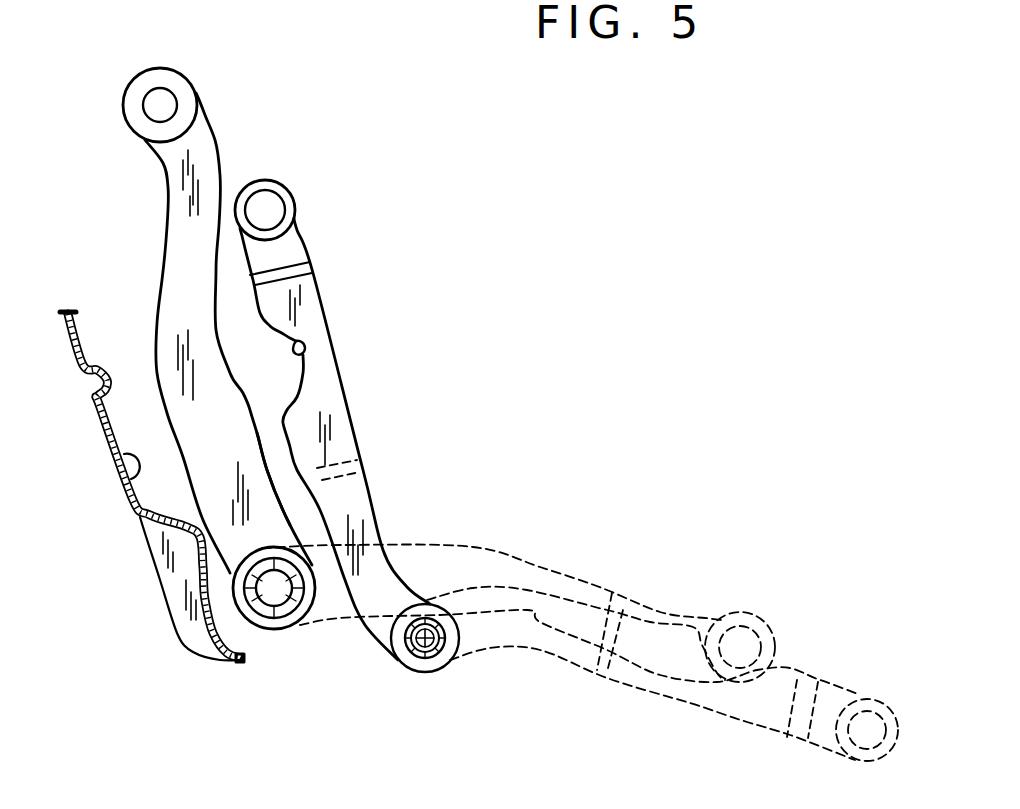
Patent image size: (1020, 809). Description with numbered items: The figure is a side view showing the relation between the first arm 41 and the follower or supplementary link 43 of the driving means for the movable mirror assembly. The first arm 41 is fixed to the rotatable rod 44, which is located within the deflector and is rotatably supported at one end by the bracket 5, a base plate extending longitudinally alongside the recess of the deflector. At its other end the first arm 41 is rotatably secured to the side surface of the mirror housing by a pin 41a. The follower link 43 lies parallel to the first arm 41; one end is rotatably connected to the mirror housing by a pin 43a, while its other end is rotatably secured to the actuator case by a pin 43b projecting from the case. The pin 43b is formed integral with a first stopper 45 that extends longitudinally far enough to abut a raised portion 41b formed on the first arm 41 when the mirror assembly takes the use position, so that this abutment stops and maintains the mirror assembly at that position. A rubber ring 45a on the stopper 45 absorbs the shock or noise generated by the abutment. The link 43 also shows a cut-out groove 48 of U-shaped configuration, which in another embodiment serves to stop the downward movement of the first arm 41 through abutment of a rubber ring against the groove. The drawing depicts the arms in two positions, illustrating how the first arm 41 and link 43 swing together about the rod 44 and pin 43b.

The bracket 5 is at (108, 427).
The first arm 41 is at (180, 268).
The pin 41a is at (163, 103).
The raised portion 41b is at (247, 420).
The follower link 43 is at (327, 403).
The pin 43a is at (267, 203).
The pin 43b is at (450, 660).
The rotatable rod 44 is at (280, 613).
The first stopper 45 is at (408, 650).
The rubber ring 45a is at (402, 657).
The cut-out groove 48 is at (303, 350).